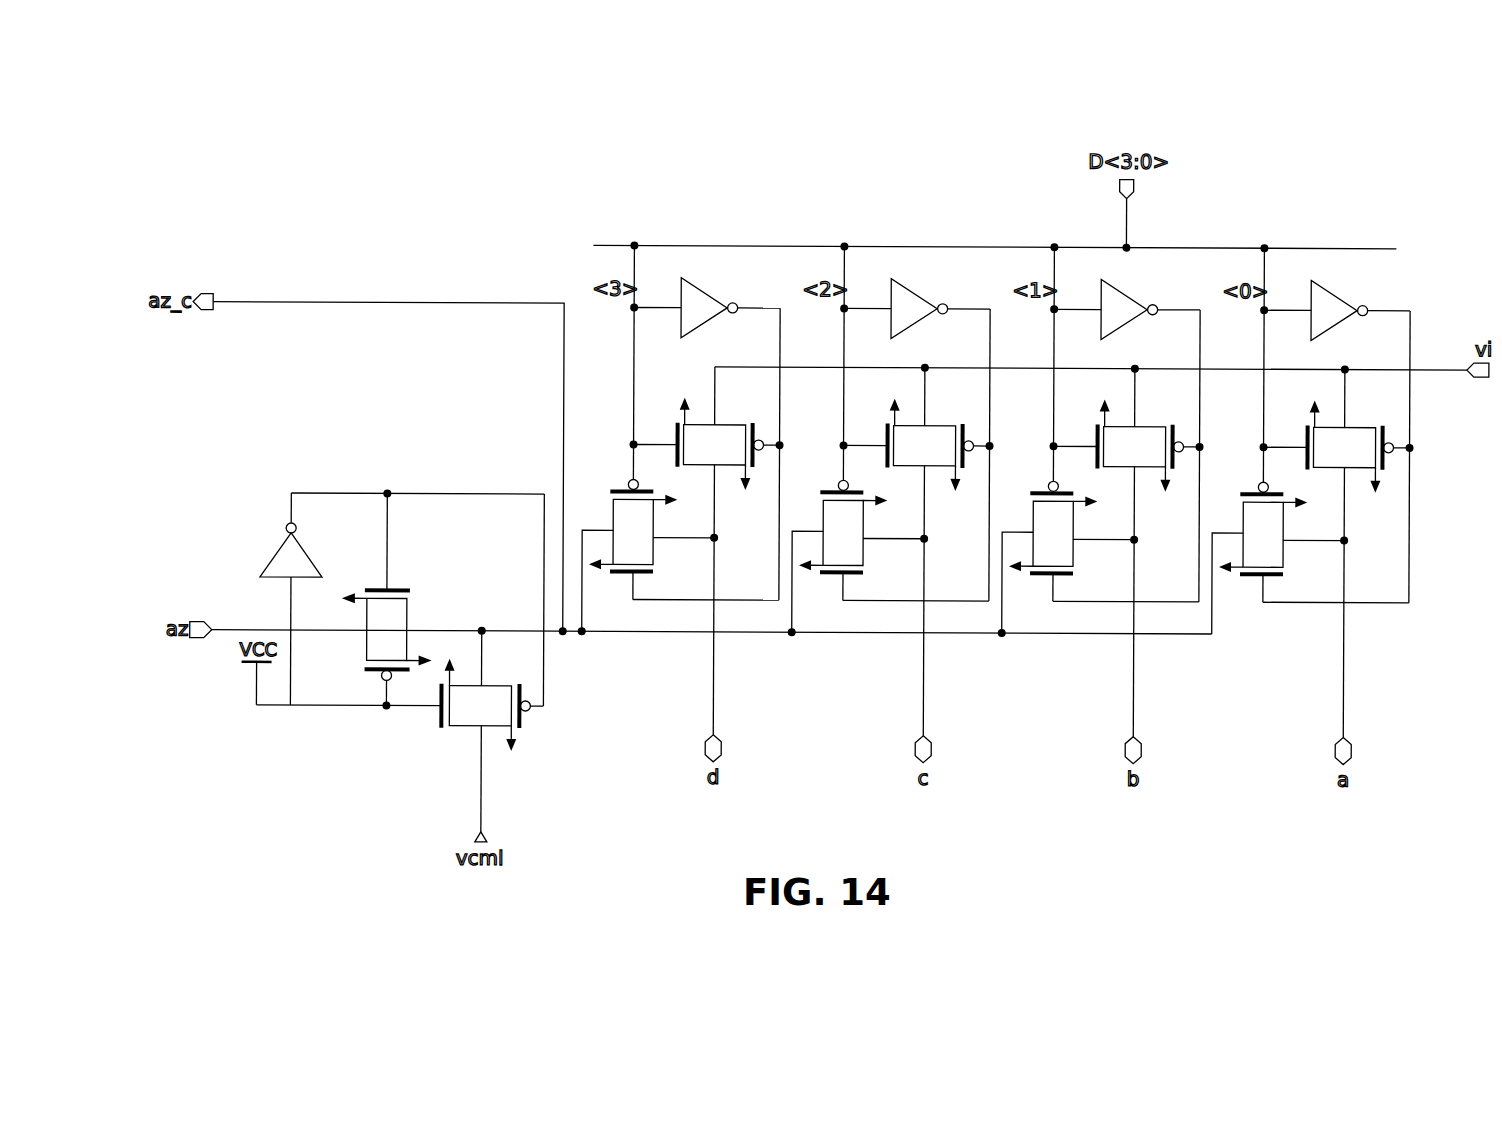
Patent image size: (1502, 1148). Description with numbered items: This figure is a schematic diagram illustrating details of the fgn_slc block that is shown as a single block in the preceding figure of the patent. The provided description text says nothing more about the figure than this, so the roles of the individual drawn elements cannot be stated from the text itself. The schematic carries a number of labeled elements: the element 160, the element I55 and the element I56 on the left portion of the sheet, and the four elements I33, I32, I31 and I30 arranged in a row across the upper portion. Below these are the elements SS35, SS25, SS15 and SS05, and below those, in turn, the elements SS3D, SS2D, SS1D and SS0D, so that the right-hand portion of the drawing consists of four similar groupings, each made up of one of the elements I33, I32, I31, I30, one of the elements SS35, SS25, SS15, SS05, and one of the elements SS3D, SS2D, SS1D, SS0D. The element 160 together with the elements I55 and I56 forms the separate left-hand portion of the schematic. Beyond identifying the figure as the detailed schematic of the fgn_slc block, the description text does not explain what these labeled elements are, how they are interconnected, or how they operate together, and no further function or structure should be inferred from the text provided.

The inverter 160 is at (282, 599).
The transmission gate switch I55 is at (384, 599).
The transmission gate switch I56 is at (495, 732).
The inverter I33 is at (707, 303).
The inverter I32 is at (917, 304).
The inverter I31 is at (1127, 305).
The inverter I30 is at (1337, 306).
The transmission gate switch SS35 is at (706, 432).
The transmission gate switch SS25 is at (916, 433).
The transmission gate switch SS15 is at (1126, 434).
The transmission gate switch SS05 is at (1336, 435).
The transmission gate switch SS3D is at (648, 555).
The transmission gate switch SS2D is at (858, 556).
The transmission gate switch SS1D is at (1068, 557).
The transmission gate switch SS0D is at (1278, 558).